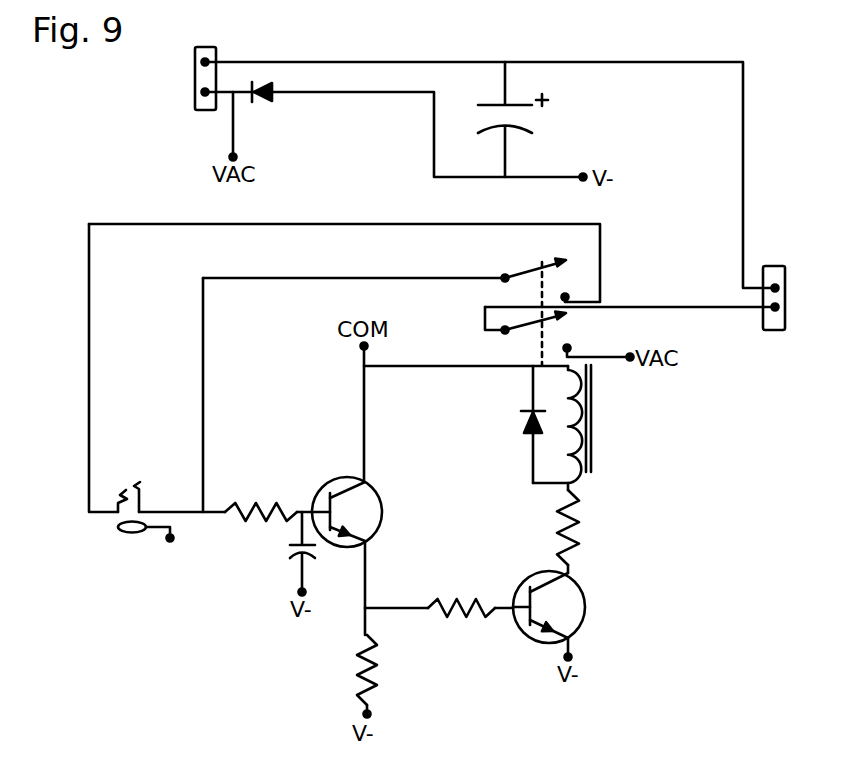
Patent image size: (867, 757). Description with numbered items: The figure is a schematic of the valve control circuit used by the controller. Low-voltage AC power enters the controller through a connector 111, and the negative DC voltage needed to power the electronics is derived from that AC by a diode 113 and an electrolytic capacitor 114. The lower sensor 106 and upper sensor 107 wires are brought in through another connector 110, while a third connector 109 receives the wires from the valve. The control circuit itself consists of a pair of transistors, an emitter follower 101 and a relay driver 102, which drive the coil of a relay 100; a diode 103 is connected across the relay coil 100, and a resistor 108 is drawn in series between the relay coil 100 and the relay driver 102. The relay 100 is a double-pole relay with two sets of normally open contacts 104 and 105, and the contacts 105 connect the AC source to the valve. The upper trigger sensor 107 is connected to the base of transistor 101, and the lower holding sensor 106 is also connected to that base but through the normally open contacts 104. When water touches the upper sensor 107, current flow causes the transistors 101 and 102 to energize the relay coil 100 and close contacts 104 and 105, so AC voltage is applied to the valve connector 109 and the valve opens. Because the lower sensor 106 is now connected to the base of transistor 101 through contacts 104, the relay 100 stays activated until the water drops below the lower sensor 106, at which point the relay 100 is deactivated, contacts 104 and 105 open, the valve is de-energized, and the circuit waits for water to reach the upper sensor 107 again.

The relay 100 is at (596, 405).
The emitter follower transistor 101 is at (382, 503).
The relay driver transistor 102 is at (585, 598).
The diode 103 is at (523, 430).
The normally open contacts 104 is at (525, 271).
The normally open contacts 105 is at (523, 329).
The lower sensor 106 is at (121, 494).
The upper sensor 107 is at (143, 483).
The resistor 108 is at (573, 534).
The valve connector 109 is at (777, 265).
The sensor connector 110 is at (107, 528).
The power connector 111 is at (162, 60).
The diode 113 is at (270, 105).
The electrolytic capacitor 114 is at (528, 113).